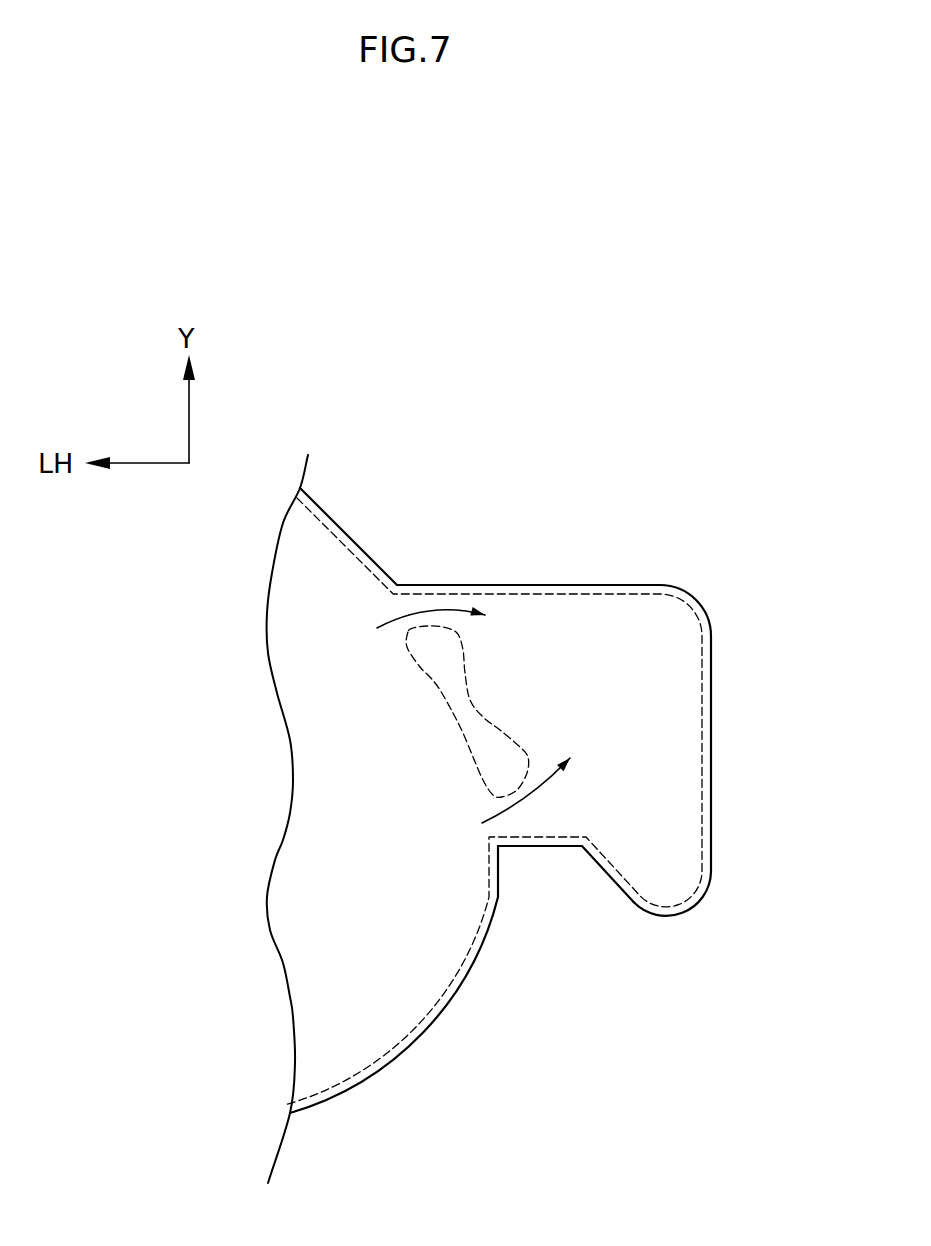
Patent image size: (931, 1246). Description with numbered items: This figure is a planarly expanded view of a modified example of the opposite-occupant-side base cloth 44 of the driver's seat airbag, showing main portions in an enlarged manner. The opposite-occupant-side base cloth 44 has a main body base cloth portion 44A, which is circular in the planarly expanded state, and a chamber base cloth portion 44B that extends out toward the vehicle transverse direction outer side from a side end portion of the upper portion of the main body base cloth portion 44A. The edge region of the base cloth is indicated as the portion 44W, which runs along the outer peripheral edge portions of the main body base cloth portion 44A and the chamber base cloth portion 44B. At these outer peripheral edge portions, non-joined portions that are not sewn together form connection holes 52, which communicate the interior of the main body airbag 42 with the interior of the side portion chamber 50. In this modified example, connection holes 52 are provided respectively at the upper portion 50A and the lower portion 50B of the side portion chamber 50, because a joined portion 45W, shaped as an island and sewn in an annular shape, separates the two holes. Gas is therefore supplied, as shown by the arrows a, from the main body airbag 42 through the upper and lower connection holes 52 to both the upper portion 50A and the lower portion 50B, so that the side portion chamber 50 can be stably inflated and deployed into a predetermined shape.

The main body airbag 42 is at (555, 750).
The opposite-occupant-side base cloth 44 is at (350, 513).
The main body base cloth portion 44A is at (410, 987).
The chamber base cloth portion 44B is at (653, 617).
The flange portion of wall 44W is at (318, 507).
The joined portion 45W is at (440, 687).
The side portion chamber 50 is at (587, 721).
The upper portion of side portion chamber 50A is at (523, 613).
The lower portion of side portion chamber 50B is at (535, 820).
The connection hole 52 is at (403, 627).
The arrow a is at (428, 610).